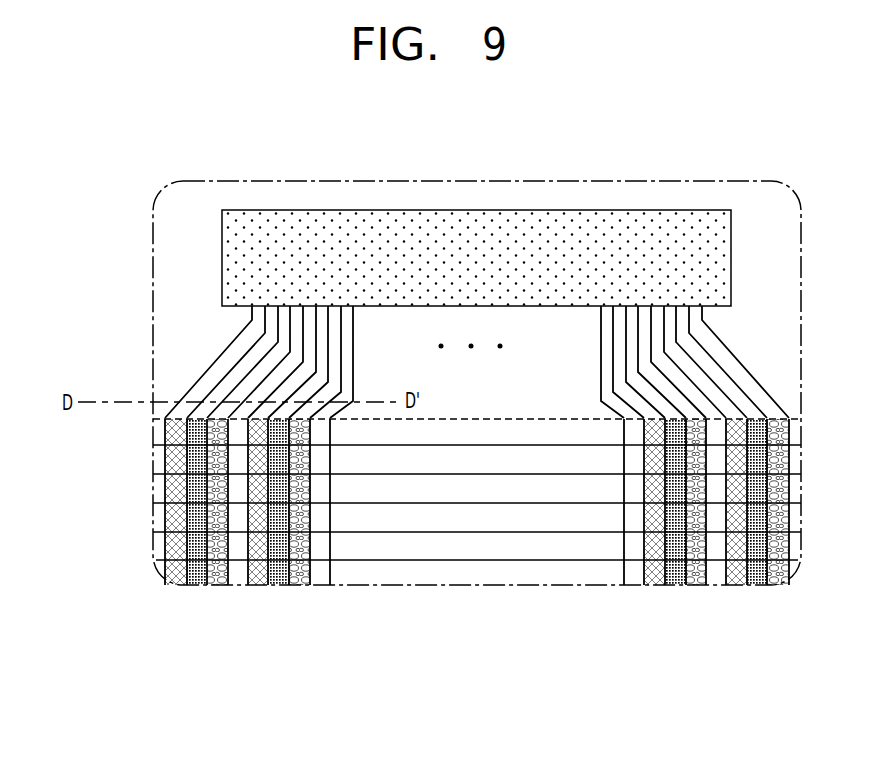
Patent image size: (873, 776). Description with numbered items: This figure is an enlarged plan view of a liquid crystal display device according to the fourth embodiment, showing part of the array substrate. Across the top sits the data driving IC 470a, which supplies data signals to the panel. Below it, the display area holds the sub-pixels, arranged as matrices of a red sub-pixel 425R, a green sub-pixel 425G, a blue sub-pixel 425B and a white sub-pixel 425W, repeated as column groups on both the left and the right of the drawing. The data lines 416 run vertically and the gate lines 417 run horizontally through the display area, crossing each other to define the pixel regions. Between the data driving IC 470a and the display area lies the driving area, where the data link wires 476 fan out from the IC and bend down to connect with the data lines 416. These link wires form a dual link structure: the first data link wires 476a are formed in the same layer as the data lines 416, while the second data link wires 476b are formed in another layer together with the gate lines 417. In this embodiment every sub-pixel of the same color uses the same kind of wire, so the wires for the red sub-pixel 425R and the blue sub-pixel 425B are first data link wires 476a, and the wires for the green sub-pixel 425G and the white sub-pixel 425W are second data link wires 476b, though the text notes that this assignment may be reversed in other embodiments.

The data driving IC 470a is at (235, 262).
The data link wires 476 is at (403, 362).
The first data link wires 476a is at (245, 332).
The second data link wires 476b is at (227, 370).
The red sub-pixel 425R is at (172, 578).
The green sub-pixel 425G is at (198, 578).
The blue sub-pixel 425B is at (215, 578).
The white sub-pixel 425W is at (237, 578).
The data lines 416 is at (333, 570).
The gate lines 417 is at (479, 560).